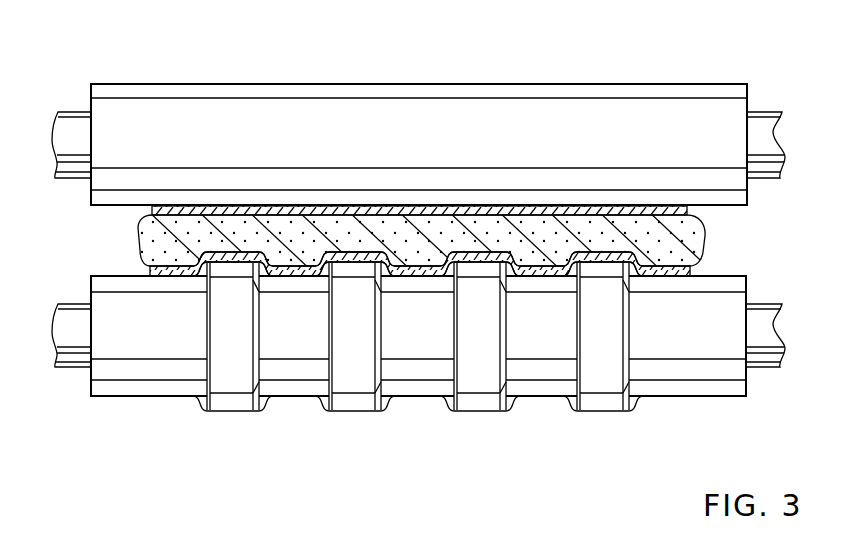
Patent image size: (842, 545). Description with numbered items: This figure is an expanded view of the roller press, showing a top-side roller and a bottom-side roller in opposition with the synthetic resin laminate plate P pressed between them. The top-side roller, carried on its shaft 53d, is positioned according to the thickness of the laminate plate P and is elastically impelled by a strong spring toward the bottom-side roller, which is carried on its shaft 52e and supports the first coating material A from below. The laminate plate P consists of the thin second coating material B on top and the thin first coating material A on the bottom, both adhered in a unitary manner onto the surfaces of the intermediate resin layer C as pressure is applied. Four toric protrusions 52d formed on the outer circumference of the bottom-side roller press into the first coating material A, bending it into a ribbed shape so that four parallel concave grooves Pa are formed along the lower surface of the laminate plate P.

The shaft of upper roller 53d is at (72, 127).
The toric protrusions 52d is at (362, 403).
The shaft of lower roller 52e is at (72, 362).
The synthetic resin laminate plate P is at (451, 236).
The second coating material B is at (361, 206).
The intermediate resin layer C is at (516, 228).
The first coating material A is at (420, 276).
The concave grooves Pa is at (360, 263).